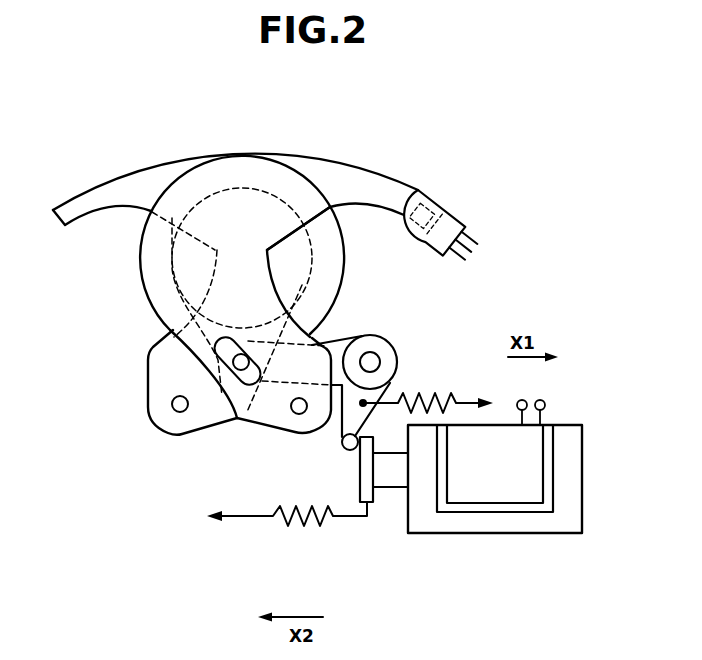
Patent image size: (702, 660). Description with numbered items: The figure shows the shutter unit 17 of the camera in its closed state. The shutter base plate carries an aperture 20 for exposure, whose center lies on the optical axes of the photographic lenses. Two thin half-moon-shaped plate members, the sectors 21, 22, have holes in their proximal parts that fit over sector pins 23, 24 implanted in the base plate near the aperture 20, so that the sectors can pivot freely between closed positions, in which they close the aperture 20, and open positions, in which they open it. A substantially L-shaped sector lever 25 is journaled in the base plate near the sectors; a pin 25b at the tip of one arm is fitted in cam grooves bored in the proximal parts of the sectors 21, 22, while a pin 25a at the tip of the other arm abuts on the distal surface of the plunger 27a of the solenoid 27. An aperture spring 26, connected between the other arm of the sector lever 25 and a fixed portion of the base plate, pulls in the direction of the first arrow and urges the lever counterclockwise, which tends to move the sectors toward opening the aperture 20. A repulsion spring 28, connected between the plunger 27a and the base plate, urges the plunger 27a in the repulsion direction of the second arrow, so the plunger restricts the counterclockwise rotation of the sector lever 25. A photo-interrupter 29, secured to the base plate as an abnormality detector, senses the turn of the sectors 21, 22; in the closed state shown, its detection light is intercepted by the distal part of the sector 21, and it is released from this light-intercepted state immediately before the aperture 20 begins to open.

The shutter unit 17 is at (408, 134).
The aperture 20 is at (186, 277).
The sector 21 is at (340, 178).
The sector 22 is at (115, 188).
The sector pin 23 is at (291, 412).
The sector pin 24 is at (171, 406).
The sector lever 25 is at (389, 334).
The pin 25a is at (343, 448).
The pin 25b is at (235, 372).
The aperture spring 26 is at (437, 393).
The solenoid 27 is at (490, 549).
The plunger 27a is at (393, 478).
The repulsion spring 28 is at (308, 527).
The photo-interrupter 29 is at (455, 211).